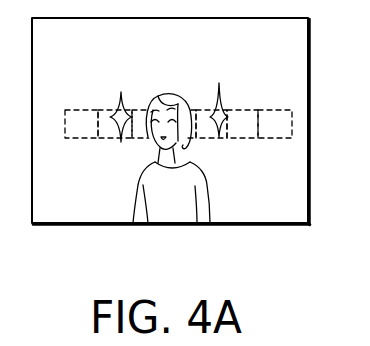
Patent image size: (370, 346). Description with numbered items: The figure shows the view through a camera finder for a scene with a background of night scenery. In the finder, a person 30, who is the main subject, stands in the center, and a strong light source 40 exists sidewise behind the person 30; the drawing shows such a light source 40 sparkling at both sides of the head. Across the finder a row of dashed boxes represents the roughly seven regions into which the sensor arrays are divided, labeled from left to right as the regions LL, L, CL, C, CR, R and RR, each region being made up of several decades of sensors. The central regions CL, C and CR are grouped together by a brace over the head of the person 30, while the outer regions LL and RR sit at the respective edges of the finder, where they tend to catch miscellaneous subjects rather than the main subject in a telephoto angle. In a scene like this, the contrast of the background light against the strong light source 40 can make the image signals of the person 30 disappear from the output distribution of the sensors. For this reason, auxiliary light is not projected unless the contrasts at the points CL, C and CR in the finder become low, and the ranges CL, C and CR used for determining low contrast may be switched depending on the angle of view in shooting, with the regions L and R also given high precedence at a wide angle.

The person 30 is at (170, 210).
The strong light source 40 is at (115, 110).
The LL region LL is at (83, 122).
The L region L is at (110, 122).
The CL region CL is at (148, 124).
The C region C is at (228, 92).
The CR region CR is at (211, 124).
The R region R is at (240, 122).
The RR region RR is at (283, 122).